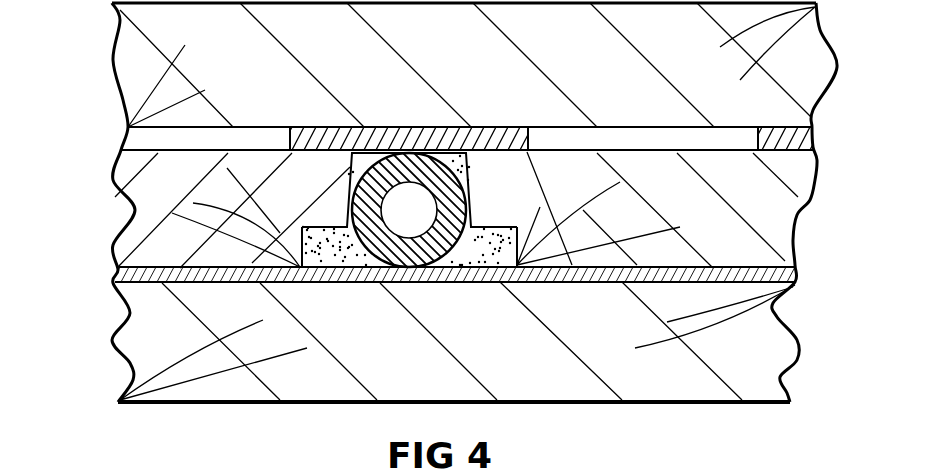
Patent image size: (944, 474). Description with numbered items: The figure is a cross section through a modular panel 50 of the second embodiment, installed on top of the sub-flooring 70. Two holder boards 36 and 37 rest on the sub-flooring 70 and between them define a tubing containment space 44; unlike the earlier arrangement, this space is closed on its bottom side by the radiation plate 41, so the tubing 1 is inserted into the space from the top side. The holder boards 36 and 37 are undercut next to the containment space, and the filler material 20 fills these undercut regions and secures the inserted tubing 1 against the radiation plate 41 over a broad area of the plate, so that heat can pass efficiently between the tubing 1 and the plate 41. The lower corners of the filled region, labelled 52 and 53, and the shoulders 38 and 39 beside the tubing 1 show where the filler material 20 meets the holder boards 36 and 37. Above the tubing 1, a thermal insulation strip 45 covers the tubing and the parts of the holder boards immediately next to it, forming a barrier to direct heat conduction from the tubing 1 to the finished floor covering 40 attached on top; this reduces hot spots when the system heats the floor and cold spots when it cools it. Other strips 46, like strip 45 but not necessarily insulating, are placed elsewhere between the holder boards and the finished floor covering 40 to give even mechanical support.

The tubing 1 is at (427, 158).
The filler material 20 is at (367, 126).
The holder board 36 is at (757, 210).
The holder board 37 is at (146, 220).
The conductive paste right portion 38 is at (467, 203).
The conductive paste left portion 39 is at (345, 205).
The finished floor covering 40 is at (104, 59).
The radiation plate 41 is at (410, 285).
The tubing containment space 44 is at (444, 112).
The thermal insulation strip 45 is at (282, 139).
The other strips 46 is at (742, 137).
The modular panel 50 is at (100, 178).
The paste fillet right 52 is at (503, 283).
The paste fillet left 53 is at (318, 288).
The sub-flooring 70 is at (693, 403).